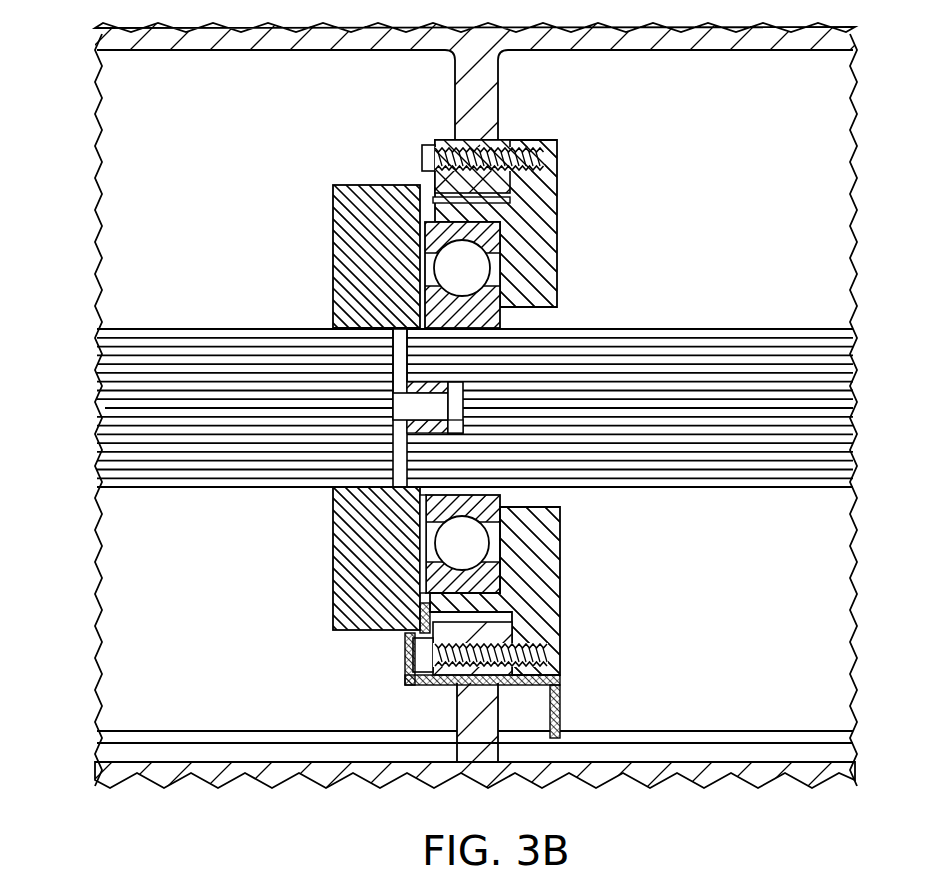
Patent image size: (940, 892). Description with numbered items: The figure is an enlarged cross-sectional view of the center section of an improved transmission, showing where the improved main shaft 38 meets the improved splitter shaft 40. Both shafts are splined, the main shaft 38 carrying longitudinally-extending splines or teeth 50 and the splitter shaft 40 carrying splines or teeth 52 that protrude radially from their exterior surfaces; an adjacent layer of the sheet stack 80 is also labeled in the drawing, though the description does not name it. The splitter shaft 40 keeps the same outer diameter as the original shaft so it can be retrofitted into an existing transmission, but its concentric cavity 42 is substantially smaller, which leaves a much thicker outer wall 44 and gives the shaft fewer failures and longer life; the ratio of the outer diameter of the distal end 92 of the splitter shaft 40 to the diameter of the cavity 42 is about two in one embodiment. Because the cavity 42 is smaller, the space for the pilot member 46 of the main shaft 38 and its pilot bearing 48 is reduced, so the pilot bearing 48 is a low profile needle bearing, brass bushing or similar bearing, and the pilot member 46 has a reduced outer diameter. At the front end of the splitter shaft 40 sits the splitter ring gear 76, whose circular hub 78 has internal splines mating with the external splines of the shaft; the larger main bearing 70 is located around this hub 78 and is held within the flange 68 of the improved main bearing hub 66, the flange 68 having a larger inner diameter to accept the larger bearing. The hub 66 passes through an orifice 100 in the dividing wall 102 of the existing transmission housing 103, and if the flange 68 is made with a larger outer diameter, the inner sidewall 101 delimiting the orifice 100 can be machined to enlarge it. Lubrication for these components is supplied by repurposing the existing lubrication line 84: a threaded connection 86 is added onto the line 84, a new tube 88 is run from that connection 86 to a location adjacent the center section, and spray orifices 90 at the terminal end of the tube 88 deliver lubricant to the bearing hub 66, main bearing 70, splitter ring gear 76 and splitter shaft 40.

The main shaft 38 is at (245, 356).
The splitter shaft 40 is at (630, 353).
The concentric cavity 42 is at (457, 400).
The outer wall 44 is at (415, 458).
The pilot member 46 is at (403, 410).
The pilot bearing 48 is at (457, 435).
The splines or teeth 50 is at (102, 408).
The splines or teeth 52 is at (852, 404).
The main bearing hub 66 is at (470, 392).
The flange 68 is at (448, 213).
The main bearing 70 is at (454, 401).
The splitter ring gear 76 is at (436, 356).
The hub 78 is at (410, 325).
The top sheet layer 80 is at (312, 338).
The lubrication line 84 is at (232, 736).
The threaded connection 86 is at (560, 720).
The new tube 88 is at (560, 680).
The spray orifices 90 is at (430, 605).
The distal end 92 is at (418, 350).
The orifice 100 is at (506, 198).
The inner sidewall 101 is at (493, 623).
The dividing wall 102 is at (470, 704).
The transmission housing 103 is at (663, 778).